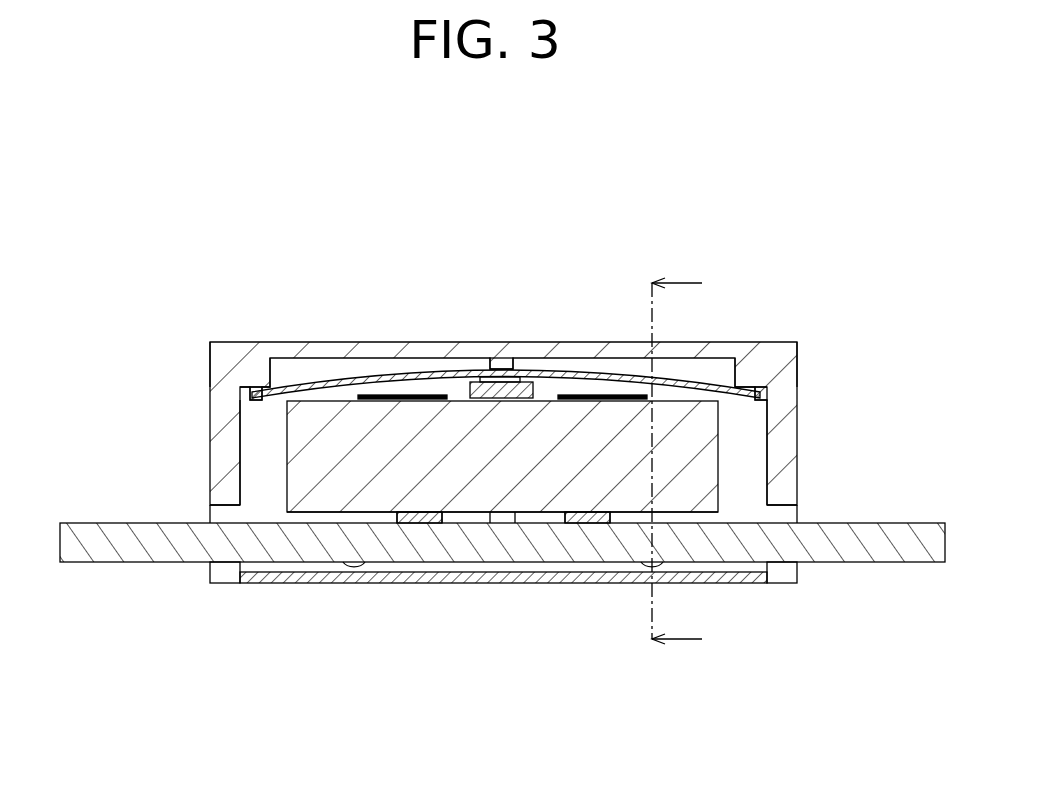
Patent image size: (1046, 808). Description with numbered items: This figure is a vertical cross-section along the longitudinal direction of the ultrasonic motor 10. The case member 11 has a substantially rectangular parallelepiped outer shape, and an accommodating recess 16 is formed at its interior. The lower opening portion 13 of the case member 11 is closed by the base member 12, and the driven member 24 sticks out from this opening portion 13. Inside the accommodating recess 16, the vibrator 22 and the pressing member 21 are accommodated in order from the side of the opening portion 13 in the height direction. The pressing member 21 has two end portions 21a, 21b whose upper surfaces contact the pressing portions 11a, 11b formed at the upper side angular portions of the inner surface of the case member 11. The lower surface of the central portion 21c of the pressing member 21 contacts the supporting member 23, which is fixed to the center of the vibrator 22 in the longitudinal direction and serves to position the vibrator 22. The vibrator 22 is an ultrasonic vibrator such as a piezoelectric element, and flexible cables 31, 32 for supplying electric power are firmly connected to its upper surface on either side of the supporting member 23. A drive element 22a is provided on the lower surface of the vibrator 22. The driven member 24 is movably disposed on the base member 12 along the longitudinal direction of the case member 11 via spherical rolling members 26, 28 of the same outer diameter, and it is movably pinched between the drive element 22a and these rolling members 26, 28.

The ultrasonic motor 10 is at (521, 779).
The case member 11 is at (308, 355).
The pressing portion 11a is at (263, 373).
The pressing portion 11b is at (743, 378).
The base member 12 is at (510, 584).
The opening portion 13 is at (223, 507).
The accommodating recess 16 is at (243, 436).
The pressing member 21 is at (546, 372).
The end portion 21a is at (246, 402).
The end portion 21b is at (754, 401).
The central portion 21c is at (508, 370).
The vibrator 22 is at (703, 433).
The drive element 22a is at (428, 524).
The supporting member 23 is at (483, 383).
The driven member 24 is at (833, 552).
The rolling member 26 is at (668, 583).
The rolling member 28 is at (360, 570).
The flexible cable 31 is at (373, 394).
The flexible cable 32 is at (590, 395).